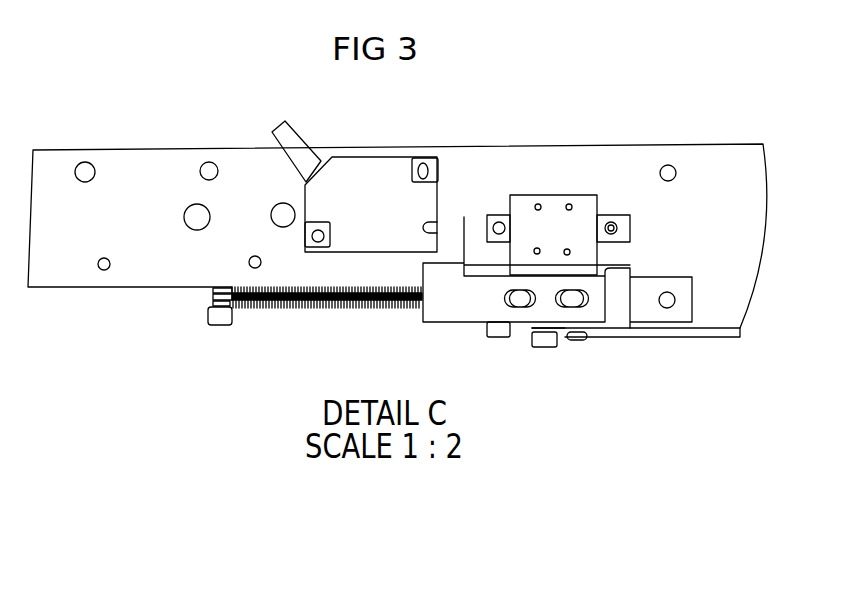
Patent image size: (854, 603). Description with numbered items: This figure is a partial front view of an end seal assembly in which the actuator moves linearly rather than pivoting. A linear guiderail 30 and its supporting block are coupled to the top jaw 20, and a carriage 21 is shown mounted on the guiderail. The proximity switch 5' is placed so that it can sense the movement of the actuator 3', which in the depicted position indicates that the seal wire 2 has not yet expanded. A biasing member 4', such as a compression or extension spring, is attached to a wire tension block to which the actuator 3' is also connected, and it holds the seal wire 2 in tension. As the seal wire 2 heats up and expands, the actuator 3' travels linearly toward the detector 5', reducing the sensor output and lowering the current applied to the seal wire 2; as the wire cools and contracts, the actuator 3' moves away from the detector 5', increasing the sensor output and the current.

The top jaw 20 is at (707, 170).
The proximity switch 5' is at (355, 186).
The biasing member 4' is at (291, 420).
The actuator 3' is at (556, 300).
The carriage 21 is at (563, 238).
The linear guiderail 30 is at (633, 225).
The seal wire 2 is at (608, 342).